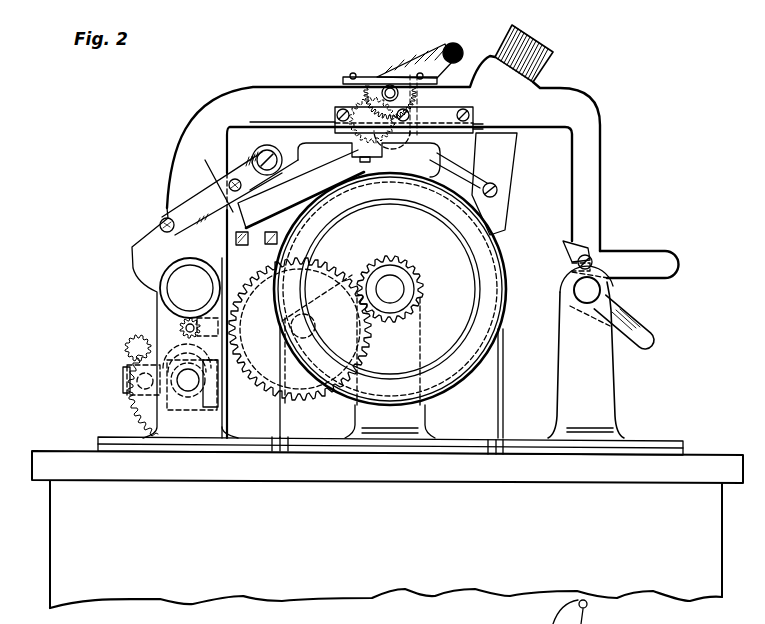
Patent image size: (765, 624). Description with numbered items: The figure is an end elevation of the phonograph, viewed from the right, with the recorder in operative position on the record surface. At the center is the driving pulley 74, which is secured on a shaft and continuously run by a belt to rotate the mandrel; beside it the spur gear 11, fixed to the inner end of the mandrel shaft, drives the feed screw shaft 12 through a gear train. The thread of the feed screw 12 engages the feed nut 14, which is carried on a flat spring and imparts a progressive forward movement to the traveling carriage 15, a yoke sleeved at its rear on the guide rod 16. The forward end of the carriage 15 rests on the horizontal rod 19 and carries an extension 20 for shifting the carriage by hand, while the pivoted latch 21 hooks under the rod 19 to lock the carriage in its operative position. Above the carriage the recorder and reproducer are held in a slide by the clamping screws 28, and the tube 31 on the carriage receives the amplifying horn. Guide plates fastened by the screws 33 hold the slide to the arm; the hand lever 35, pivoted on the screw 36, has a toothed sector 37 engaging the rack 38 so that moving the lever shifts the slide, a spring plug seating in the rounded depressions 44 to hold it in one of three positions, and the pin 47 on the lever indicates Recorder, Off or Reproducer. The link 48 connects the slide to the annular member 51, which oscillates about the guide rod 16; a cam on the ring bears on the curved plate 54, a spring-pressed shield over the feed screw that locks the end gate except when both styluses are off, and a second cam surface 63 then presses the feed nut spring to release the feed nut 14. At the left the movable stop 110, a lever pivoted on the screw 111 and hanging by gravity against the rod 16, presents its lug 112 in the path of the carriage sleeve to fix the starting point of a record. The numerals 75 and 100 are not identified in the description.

The spur gear 11 is at (416, 283).
The feed screw shaft 12 is at (191, 398).
The feed nut 14 is at (234, 413).
The traveling carriage 15 is at (548, 117).
The guide rod 16 is at (180, 296).
The horizontal rod 19 is at (573, 293).
The extension 20 is at (673, 276).
The latch 21 is at (647, 333).
The clamping screws 28 is at (498, 192).
The tube 31 is at (550, 60).
The screws 33 is at (473, 110).
The hand lever 35 is at (448, 46).
The screw 36 is at (408, 98).
The toothed sector 37 is at (364, 97).
The rack 38 is at (365, 102).
The rounded depressions 44 is at (413, 132).
The pin 47 is at (415, 73).
The link 48 is at (227, 178).
The annular member 51 is at (157, 286).
The curved plate 54 is at (128, 368).
The cam surface 63 is at (279, 200).
The driving pulley 74 is at (447, 388).
The arm 75 is at (218, 208).
The base 100 is at (387, 537).
The movable stop 110 is at (125, 348).
The screw 111 is at (220, 327).
The lug 112 is at (215, 310).